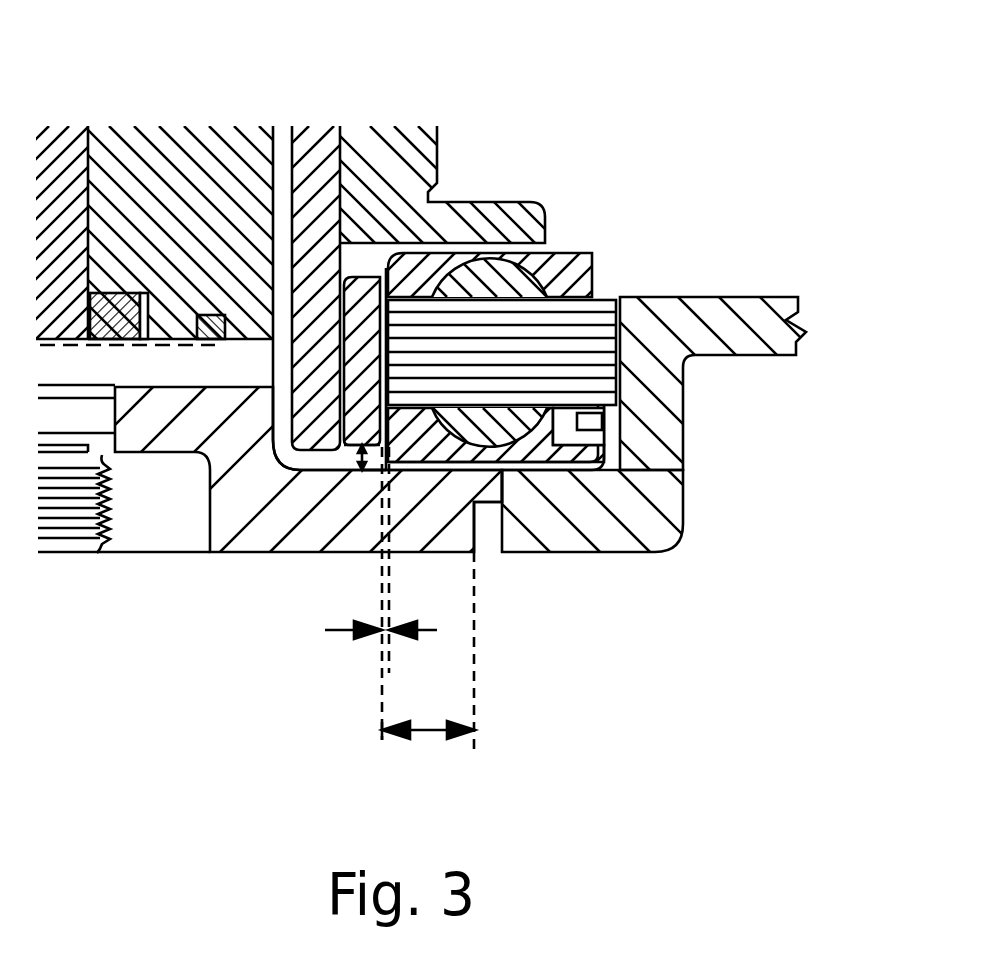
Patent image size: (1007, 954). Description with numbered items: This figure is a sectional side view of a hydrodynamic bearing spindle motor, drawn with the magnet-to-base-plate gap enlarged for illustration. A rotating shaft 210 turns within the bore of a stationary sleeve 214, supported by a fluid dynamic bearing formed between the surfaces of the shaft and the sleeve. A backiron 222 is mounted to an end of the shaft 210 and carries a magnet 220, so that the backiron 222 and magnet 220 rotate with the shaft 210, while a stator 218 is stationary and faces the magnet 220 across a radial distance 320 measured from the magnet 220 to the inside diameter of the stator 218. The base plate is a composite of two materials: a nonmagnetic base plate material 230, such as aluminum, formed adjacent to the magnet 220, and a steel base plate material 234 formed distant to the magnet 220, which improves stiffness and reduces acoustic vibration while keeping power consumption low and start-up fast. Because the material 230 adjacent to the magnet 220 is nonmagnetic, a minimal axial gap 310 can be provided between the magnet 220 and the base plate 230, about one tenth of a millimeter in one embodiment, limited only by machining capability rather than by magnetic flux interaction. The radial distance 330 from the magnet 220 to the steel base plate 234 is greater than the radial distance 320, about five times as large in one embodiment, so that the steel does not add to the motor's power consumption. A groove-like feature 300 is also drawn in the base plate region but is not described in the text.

The shaft 210 is at (52, 150).
The sleeve 214 is at (175, 155).
The stator 218 is at (570, 343).
The magnet 220 is at (390, 262).
The backiron 222 is at (310, 160).
The base plate material 230 is at (308, 525).
The steel base plate material 234 is at (578, 507).
The groove 300 is at (475, 512).
The axial gap 310 is at (358, 460).
The radial distance 320 is at (340, 632).
The radial distance 330 is at (430, 730).